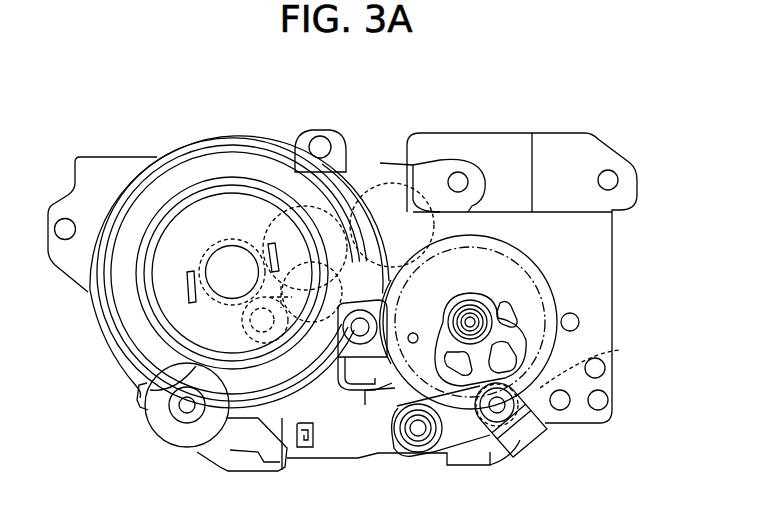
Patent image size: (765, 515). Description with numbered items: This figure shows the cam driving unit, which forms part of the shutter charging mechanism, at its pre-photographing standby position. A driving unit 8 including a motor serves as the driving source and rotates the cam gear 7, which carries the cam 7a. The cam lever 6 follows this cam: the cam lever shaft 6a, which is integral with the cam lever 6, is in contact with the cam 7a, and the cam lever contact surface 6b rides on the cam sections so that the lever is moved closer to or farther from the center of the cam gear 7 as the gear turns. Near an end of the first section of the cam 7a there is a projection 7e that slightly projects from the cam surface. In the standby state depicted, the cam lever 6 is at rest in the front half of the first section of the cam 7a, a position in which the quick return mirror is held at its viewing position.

The driving unit 8 is at (240, 213).
The cam gear 7 is at (525, 287).
The cam 7a is at (520, 305).
The projection 7e is at (393, 408).
The cam lever 6 is at (455, 440).
The cam lever shaft 6a is at (620, 352).
The cam lever contact surface 6b is at (526, 456).